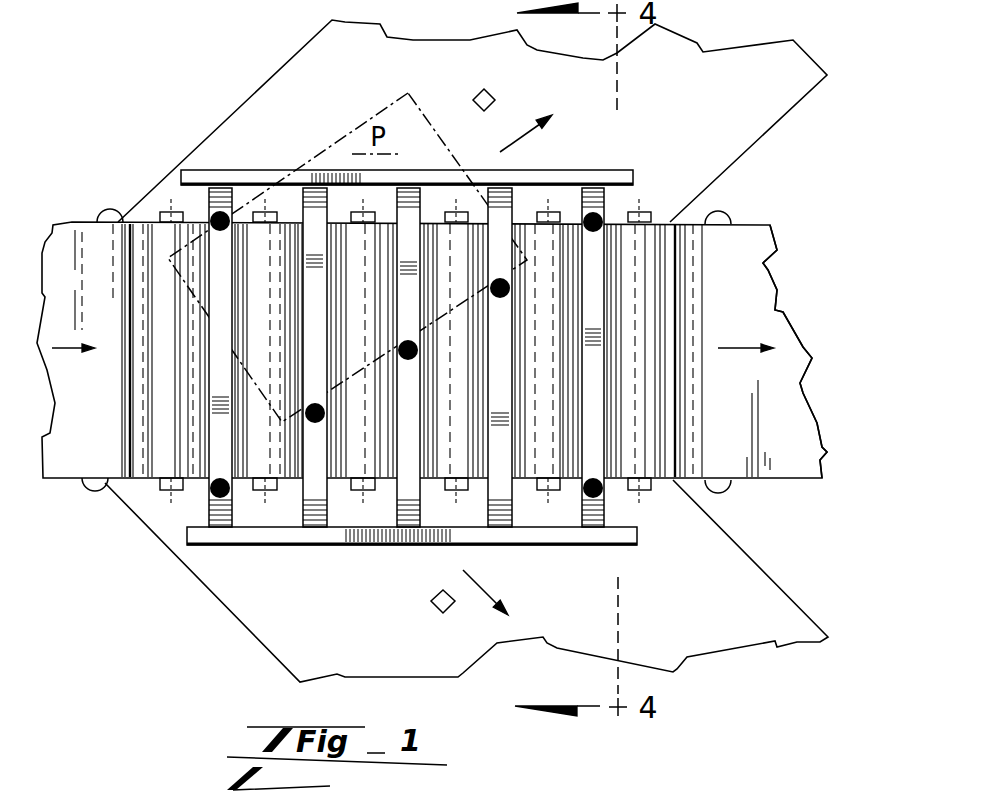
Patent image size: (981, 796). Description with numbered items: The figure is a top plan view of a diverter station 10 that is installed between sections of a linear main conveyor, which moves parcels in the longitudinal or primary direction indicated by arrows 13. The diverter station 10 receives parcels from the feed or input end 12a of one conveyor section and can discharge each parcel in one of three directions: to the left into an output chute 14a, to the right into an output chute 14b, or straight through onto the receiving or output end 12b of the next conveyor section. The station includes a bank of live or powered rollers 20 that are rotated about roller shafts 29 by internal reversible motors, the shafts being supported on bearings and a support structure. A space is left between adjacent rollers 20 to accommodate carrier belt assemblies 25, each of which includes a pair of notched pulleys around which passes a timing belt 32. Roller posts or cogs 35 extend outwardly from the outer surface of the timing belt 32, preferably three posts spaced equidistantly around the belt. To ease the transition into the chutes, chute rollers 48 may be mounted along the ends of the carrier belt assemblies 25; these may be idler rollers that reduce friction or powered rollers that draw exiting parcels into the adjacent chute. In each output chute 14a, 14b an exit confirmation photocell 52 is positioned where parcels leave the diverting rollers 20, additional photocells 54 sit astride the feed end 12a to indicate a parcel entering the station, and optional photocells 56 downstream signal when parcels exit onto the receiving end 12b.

The diverter station 10 is at (207, 618).
The feed or input end 12a is at (70, 222).
The receiving or output end 12b is at (778, 257).
The arrows 13 is at (727, 347).
The output chute 14a is at (273, 77).
The output chute 14b is at (757, 587).
The live or powered rollers 20 is at (127, 216).
The carrier belt assemblies 25 is at (168, 213).
The roller shafts 29 is at (202, 208).
The timing belt 32 is at (408, 197).
The roller posts or cogs 35 is at (583, 214).
The chute rollers 48 is at (590, 176).
The exit confirmation photocell 52 is at (495, 99).
The photocells 54 is at (83, 481).
The photocells 56 is at (716, 210).